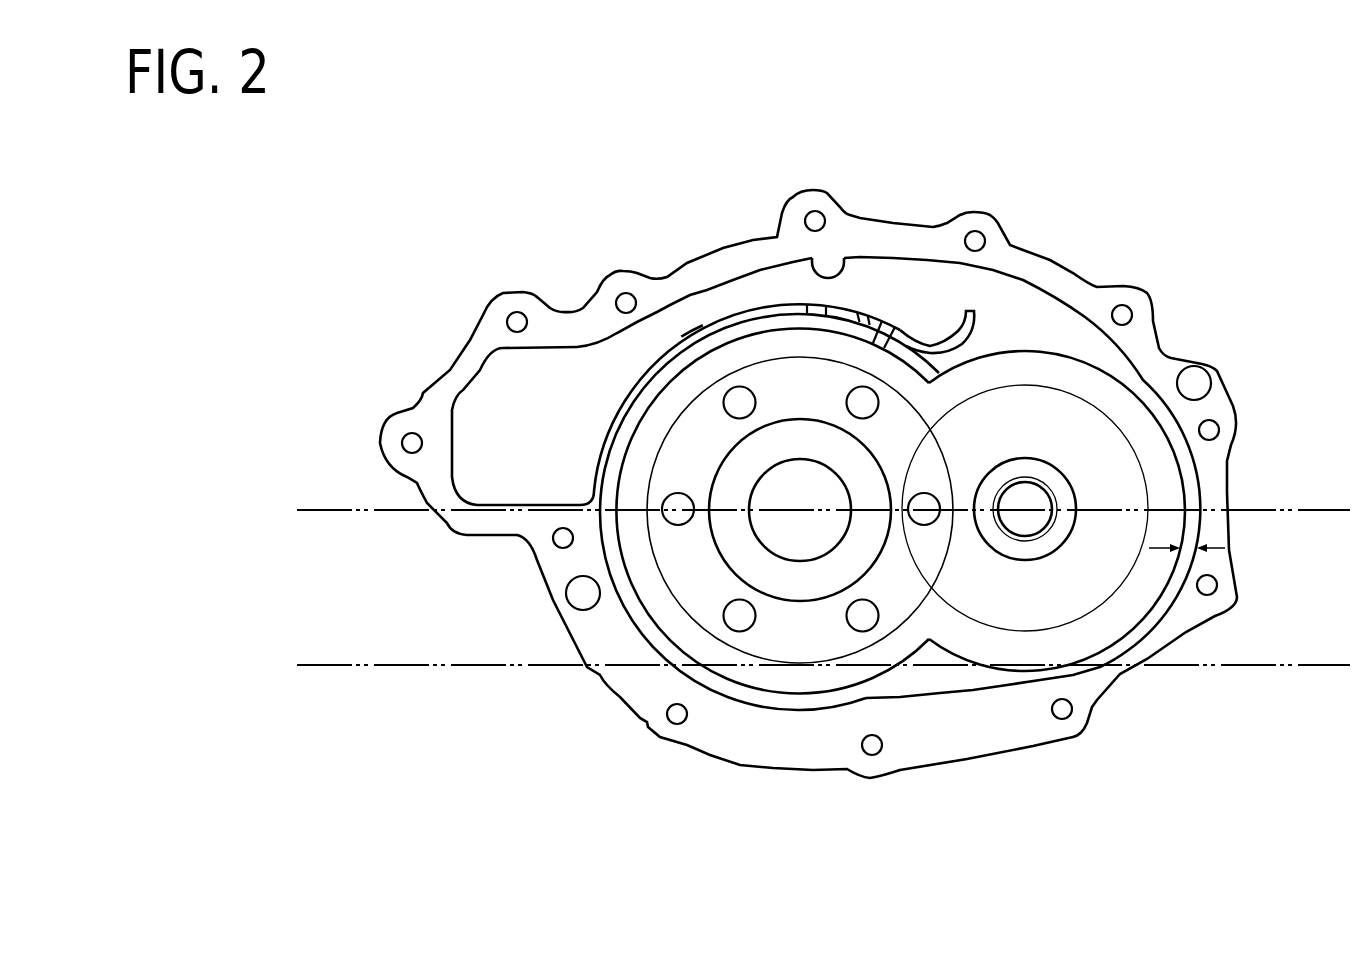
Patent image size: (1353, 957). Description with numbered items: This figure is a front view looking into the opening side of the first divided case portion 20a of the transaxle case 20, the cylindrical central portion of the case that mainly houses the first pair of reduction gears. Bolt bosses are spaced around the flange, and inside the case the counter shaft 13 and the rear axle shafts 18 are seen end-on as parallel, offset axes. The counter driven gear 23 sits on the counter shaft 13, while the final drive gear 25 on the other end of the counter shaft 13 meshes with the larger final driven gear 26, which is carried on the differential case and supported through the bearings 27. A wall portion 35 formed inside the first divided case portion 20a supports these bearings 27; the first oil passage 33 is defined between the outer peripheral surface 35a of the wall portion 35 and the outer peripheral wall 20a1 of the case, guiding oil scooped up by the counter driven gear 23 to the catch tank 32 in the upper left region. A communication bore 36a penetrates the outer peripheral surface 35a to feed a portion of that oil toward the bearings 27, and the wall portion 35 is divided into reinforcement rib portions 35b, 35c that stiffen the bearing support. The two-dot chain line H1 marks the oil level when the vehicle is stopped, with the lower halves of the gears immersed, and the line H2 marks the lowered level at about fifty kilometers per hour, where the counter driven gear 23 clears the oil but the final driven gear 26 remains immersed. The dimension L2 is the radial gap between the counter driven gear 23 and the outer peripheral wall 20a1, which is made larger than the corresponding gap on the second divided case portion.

The counter shaft 13 is at (1036, 500).
The rear axle shafts 18 is at (787, 492).
The transaxle case 20 is at (809, 470).
The first divided case portion 20a is at (608, 719).
The outer peripheral wall 20a1 is at (814, 272).
The counter driven gear 23 is at (1105, 565).
The final drive gear 25 is at (1000, 548).
The final driven gear 26 is at (914, 578).
The bearings 27 is at (796, 572).
The catch tank 32 is at (510, 433).
The first oil passage 33 is at (933, 297).
The wall portion 35 is at (752, 327).
The outer peripheral surface 35a is at (687, 330).
The reinforcement rib portion 35b is at (893, 333).
The reinforcement rib portion 35c is at (815, 317).
The communication bore 36a is at (869, 316).
The height level H1 is at (797, 513).
The height level H2 is at (797, 664).
The length of radial gap L2 is at (1212, 548).